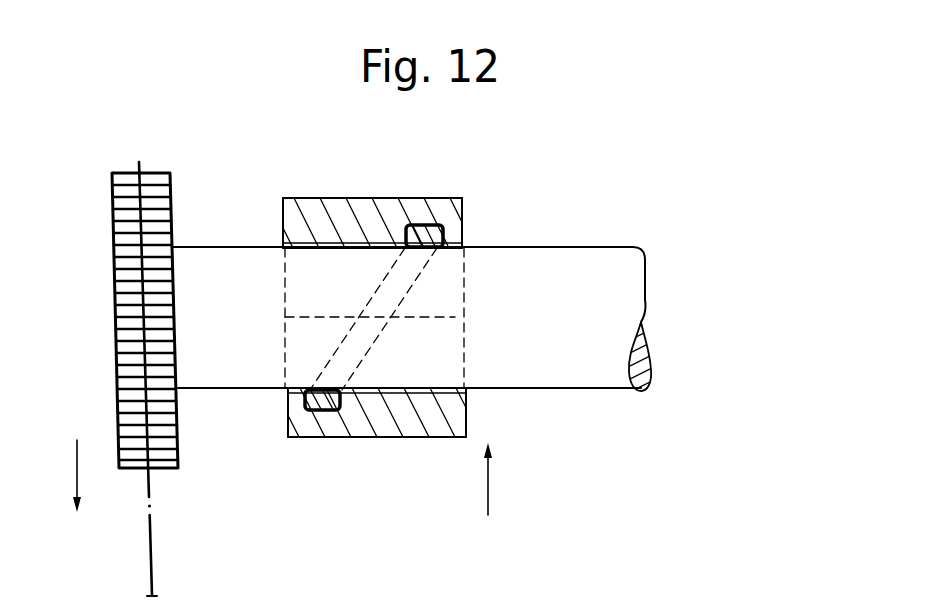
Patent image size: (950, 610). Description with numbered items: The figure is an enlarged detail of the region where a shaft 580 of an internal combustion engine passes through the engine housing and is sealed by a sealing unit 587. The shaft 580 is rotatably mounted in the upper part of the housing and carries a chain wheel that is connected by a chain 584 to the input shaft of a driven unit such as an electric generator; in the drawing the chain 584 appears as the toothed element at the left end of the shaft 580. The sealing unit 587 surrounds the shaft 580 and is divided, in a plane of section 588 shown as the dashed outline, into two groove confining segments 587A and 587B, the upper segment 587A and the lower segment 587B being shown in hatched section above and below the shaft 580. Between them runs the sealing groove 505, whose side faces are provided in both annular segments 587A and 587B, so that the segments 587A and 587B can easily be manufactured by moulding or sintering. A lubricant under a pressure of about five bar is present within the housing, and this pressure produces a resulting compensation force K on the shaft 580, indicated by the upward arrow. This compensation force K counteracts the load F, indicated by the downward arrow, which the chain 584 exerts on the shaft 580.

The chain 584 is at (151, 547).
The shaft 580 is at (590, 268).
The sealing unit 587 is at (434, 179).
The groove confining segment 587A is at (329, 208).
The groove confining segment 587B is at (368, 415).
The sealing groove 505 is at (434, 267).
The plane of section 588 is at (452, 318).
The load F is at (74, 448).
The compensation force K is at (490, 497).